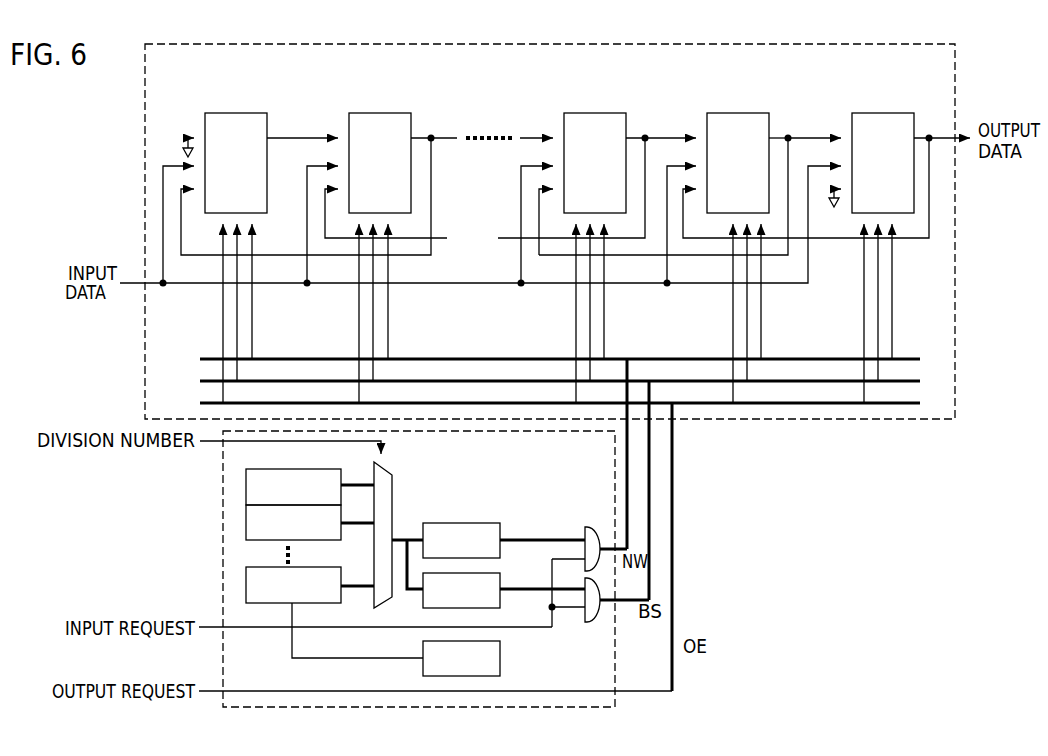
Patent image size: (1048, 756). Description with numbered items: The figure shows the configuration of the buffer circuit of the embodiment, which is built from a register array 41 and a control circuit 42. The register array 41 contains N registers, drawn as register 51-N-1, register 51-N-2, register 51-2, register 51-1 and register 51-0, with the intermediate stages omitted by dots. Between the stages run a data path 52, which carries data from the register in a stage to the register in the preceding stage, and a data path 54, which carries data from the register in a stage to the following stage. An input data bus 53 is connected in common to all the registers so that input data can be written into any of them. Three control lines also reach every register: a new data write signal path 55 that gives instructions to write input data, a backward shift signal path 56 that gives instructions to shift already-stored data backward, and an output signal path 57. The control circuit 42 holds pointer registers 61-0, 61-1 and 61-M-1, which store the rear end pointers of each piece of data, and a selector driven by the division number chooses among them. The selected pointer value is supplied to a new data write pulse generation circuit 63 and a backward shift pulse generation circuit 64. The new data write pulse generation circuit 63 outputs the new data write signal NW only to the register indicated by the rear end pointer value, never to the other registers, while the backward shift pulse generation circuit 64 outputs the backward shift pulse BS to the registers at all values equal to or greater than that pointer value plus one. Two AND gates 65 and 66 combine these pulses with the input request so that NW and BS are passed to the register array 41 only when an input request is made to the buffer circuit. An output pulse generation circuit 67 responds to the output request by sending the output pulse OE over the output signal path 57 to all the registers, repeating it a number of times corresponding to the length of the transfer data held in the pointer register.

The register array 41 is at (827, 419).
The control circuit 42 is at (616, 693).
The register 51-N-1 is at (258, 95).
The register 51-N-2 is at (395, 95).
The register 51-2 is at (581, 113).
The register 51-1 is at (742, 113).
The register 51-0 is at (888, 113).
The data path 52 is at (815, 137).
The input data bus 53 is at (673, 167).
The data path 54 is at (556, 257).
The new data write signal path 55 is at (905, 357).
The backward shift signal path 56 is at (913, 379).
The output signal path 57 is at (908, 402).
The pointer register 61-0 is at (246, 494).
The pointer register 61-1 is at (246, 528).
The pointer register 61-M-1 is at (246, 582).
The new data write pulse (NW) generation circuit 63 is at (460, 523).
The backward shift pulse (BS) generation circuit 64 is at (500, 580).
The AND gate 65 is at (587, 527).
The AND gate 66 is at (587, 622).
The output pulse (OE) generation circuit 67 is at (500, 657).